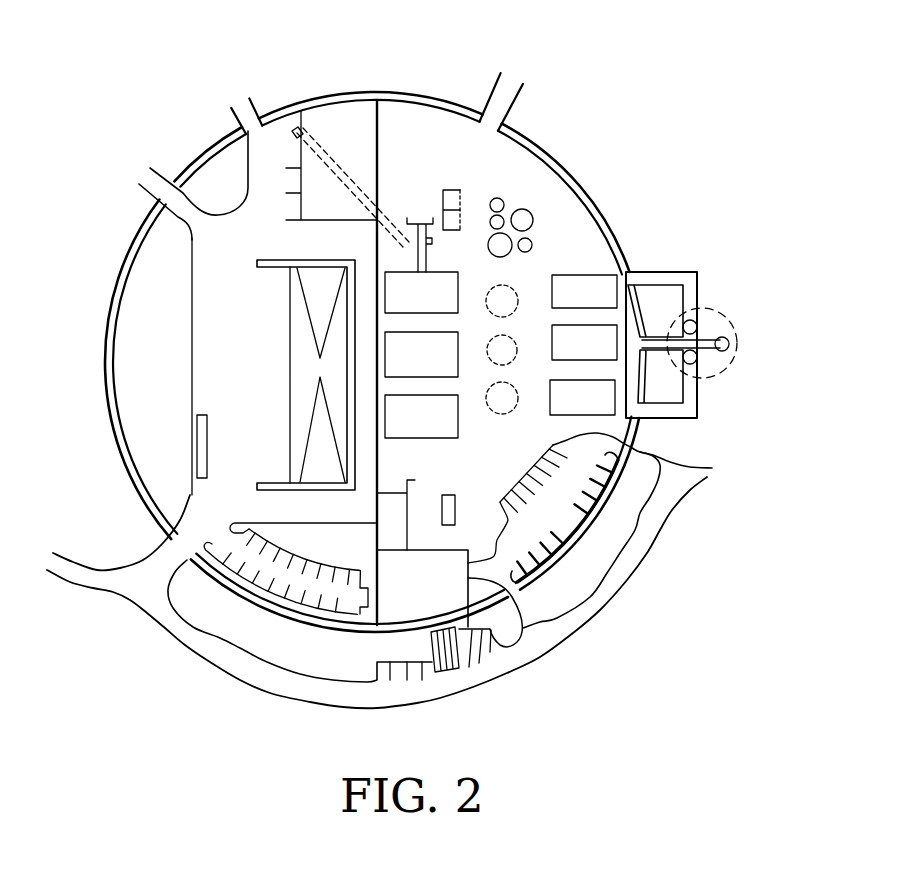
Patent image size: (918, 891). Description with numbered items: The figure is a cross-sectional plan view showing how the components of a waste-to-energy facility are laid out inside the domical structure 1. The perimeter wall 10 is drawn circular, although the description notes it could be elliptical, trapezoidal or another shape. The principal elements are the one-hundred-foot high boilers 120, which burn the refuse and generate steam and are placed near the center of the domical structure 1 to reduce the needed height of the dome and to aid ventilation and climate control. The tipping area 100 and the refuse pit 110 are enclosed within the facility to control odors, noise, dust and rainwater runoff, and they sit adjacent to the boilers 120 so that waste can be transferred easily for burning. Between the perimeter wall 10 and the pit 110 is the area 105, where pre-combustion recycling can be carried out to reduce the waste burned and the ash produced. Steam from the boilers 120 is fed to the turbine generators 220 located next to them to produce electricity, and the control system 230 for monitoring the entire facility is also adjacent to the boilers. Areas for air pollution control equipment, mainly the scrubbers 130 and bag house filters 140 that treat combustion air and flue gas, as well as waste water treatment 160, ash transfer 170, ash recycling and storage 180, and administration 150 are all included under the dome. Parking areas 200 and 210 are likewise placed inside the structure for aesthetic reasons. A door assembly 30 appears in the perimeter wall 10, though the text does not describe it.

The domical structure 1 is at (368, 76).
The perimeter wall 10 is at (110, 305).
The entry door assembly 30 is at (740, 332).
The tipping area 100 is at (253, 353).
The area between the perimeter wall and the pit 105 is at (166, 365).
The refuse pit 110 is at (307, 396).
The boilers 120 is at (436, 433).
The scrubbers 130 is at (500, 403).
The bag house filters 140 is at (587, 293).
The administration 150 is at (428, 609).
The waste water treatment 160 is at (523, 217).
The ash transfer 170 is at (452, 207).
The ash recycling and storage 180 is at (293, 167).
The parking area 200 is at (287, 578).
The parking area 210 is at (567, 497).
The turbine generators 220 is at (452, 512).
The control system 230 is at (395, 520).